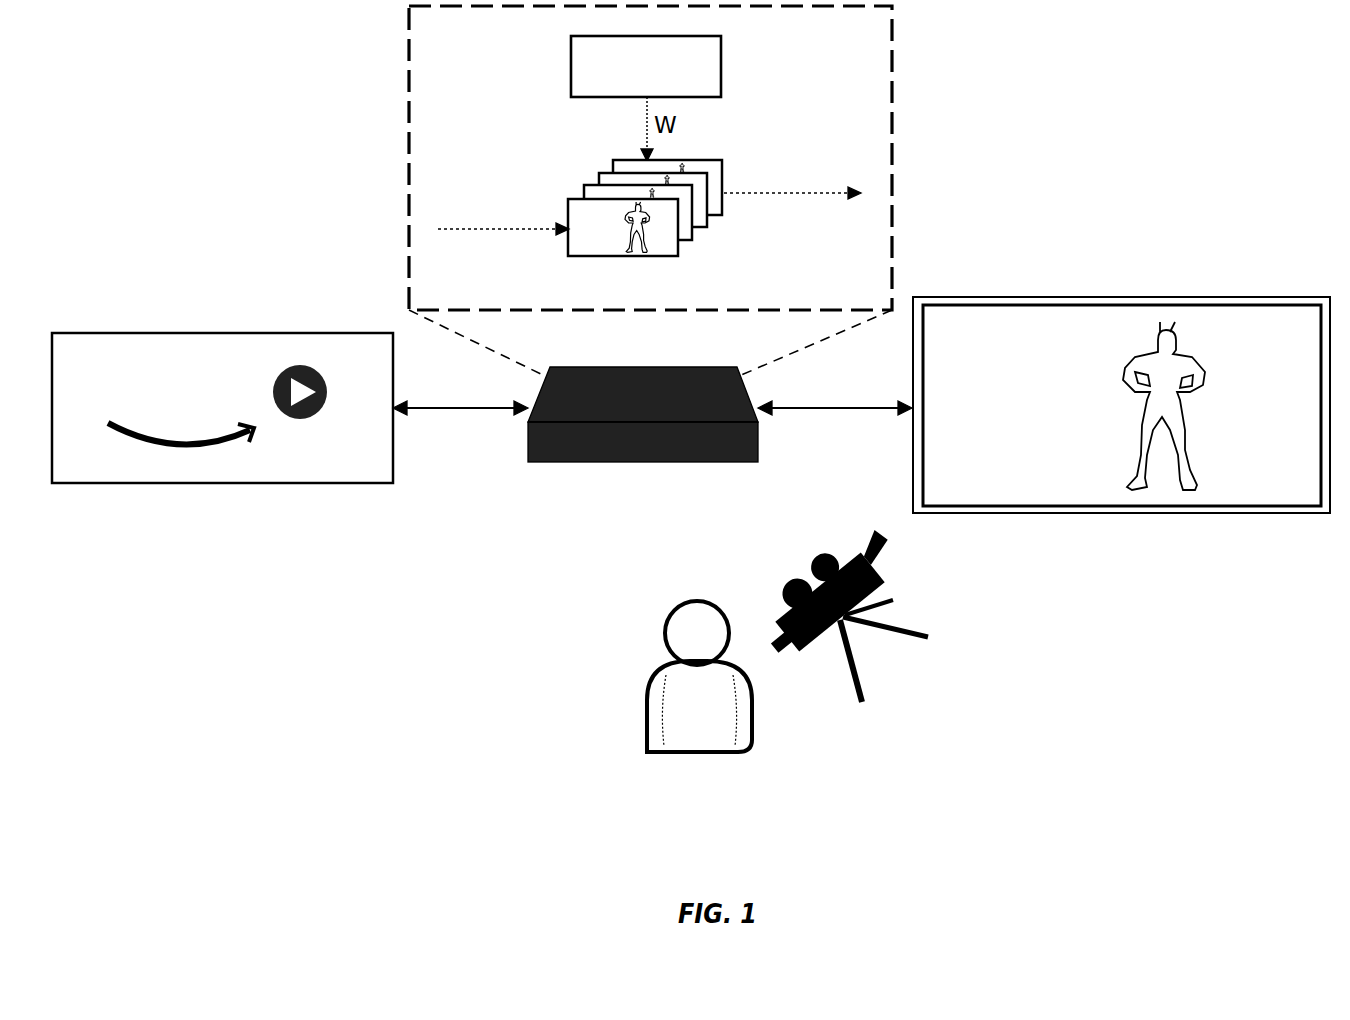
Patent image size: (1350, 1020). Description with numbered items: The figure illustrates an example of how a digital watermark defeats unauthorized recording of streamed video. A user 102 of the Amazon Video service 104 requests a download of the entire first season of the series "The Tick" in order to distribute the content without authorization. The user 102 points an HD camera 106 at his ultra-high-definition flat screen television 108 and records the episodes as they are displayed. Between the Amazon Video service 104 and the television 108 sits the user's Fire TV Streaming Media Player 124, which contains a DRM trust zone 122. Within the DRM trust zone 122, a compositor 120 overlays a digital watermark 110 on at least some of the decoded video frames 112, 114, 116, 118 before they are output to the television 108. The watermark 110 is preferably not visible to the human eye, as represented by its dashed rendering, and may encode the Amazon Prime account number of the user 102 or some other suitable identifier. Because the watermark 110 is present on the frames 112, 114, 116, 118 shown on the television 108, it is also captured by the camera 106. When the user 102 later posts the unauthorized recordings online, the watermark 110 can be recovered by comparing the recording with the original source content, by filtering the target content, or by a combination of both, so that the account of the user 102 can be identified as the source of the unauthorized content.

The user 102 is at (657, 676).
The Amazon Video service 104 is at (216, 389).
The HD camera 106 is at (821, 608).
The 4K UHD flat screen television 108 is at (1121, 383).
The digital watermark 110 is at (1197, 330).
The decoded video frame 112 is at (632, 173).
The decoded video frame 114 is at (606, 189).
The decoded video frame 116 is at (585, 205).
The decoded video frame 118 is at (587, 238).
The compositor 120 is at (599, 66).
The DRM trust zone 122 is at (603, 158).
The Fire TV Streaming Media Player 124 is at (629, 437).